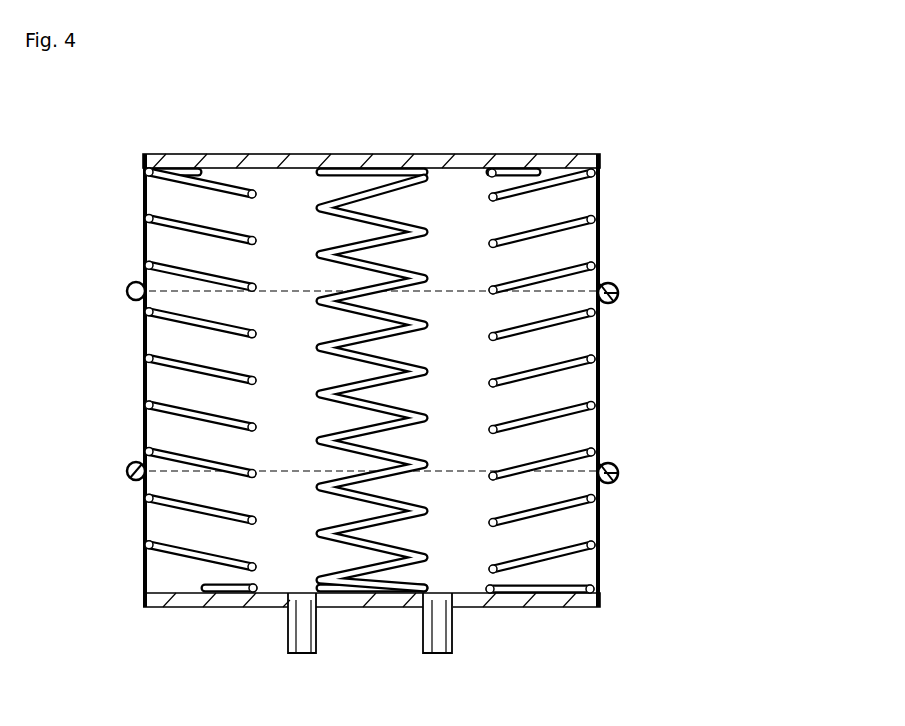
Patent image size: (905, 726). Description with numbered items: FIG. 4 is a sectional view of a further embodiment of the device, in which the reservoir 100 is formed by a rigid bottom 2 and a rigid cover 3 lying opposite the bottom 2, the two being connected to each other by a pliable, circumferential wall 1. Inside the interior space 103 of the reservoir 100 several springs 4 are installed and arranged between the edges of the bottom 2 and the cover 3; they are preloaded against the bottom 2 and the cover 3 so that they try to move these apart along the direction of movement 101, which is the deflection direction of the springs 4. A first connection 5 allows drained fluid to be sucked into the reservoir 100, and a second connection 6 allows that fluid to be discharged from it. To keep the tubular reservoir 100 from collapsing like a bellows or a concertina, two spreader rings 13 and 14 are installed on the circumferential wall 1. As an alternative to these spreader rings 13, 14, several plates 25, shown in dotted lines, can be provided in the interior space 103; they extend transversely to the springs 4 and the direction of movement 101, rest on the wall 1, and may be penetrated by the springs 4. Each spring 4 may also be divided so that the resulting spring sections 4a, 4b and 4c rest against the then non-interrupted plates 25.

The circumferential wall 1 is at (602, 250).
The bottom 2 is at (582, 603).
The cover 3 is at (547, 162).
The spring 4 is at (598, 218).
The spring section 4a is at (144, 236).
The spring section 4b is at (144, 373).
The spring section 4c is at (144, 556).
The first connection 5 is at (303, 634).
The second connection 6 is at (440, 634).
The spreader ring 13 is at (618, 473).
The spreader ring 14 is at (618, 293).
The plate 25 is at (293, 290).
The reservoir 100 is at (478, 146).
The direction of movement 101 is at (33, 432).
The interior space 103 is at (466, 226).